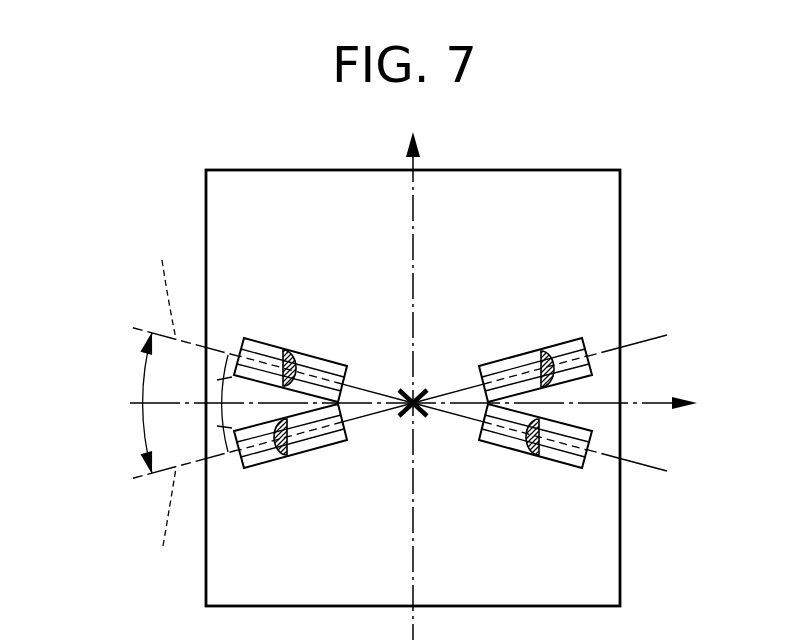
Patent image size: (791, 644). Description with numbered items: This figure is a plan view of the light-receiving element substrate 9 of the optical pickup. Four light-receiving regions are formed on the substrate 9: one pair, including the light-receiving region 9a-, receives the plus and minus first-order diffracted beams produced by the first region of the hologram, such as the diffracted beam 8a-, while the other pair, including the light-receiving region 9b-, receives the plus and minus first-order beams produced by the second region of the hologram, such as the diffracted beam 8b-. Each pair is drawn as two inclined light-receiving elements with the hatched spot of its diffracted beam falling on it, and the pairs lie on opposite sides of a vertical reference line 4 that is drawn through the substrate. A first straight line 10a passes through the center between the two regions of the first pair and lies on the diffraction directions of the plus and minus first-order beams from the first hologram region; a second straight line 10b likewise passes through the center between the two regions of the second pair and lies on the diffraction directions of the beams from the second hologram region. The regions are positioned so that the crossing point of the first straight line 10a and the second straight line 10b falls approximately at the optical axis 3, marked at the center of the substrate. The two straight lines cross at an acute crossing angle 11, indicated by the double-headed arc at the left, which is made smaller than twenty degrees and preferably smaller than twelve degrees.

The optical axis 3 is at (420, 390).
The reference axis 4 is at (413, 196).
The light-receiving element substrate 9 is at (600, 207).
The light-receiving region 9a- is at (331, 361).
The light-receiving region 9b- is at (333, 444).
The −1-order diffracted beam 8a- is at (283, 350).
The −1-order diffracted beam 8b- is at (286, 456).
The first straight line 10a is at (161, 281).
The second straight line 10b is at (155, 527).
The crossing angle 11 is at (136, 421).